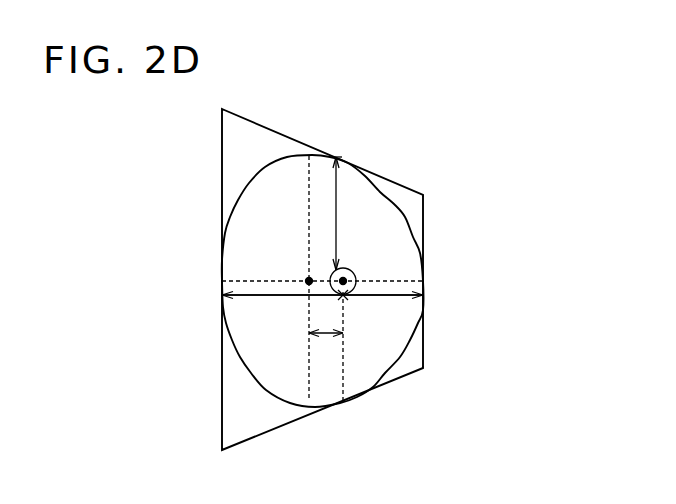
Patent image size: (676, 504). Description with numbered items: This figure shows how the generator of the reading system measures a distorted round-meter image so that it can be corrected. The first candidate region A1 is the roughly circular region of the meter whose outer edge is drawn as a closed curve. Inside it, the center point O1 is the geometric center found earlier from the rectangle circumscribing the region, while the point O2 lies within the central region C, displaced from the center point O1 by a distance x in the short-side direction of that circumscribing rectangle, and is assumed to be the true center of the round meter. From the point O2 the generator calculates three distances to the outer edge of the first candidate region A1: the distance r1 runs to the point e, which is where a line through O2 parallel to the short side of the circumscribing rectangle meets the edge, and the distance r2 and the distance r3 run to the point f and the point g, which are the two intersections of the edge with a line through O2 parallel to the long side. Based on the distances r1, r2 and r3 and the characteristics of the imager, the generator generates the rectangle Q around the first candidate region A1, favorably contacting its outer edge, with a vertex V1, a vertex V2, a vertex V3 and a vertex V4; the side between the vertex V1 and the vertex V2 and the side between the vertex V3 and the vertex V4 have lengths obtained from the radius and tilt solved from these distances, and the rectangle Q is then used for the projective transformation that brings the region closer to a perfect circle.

The rectangle Q is at (427, 221).
The vertex V1 is at (443, 194).
The vertex V2 is at (443, 380).
The vertex V3 is at (203, 103).
The vertex V4 is at (203, 460).
The first candidate region A1 is at (403, 342).
The center point O1 is at (308, 280).
The point O2 is at (350, 277).
The central region C is at (345, 276).
The point f is at (312, 283).
The point g is at (428, 284).
The point e is at (339, 146).
The distance r1 is at (325, 213).
The distance r2 is at (282, 308).
The distance r3 is at (383, 308).
The distance x is at (326, 346).